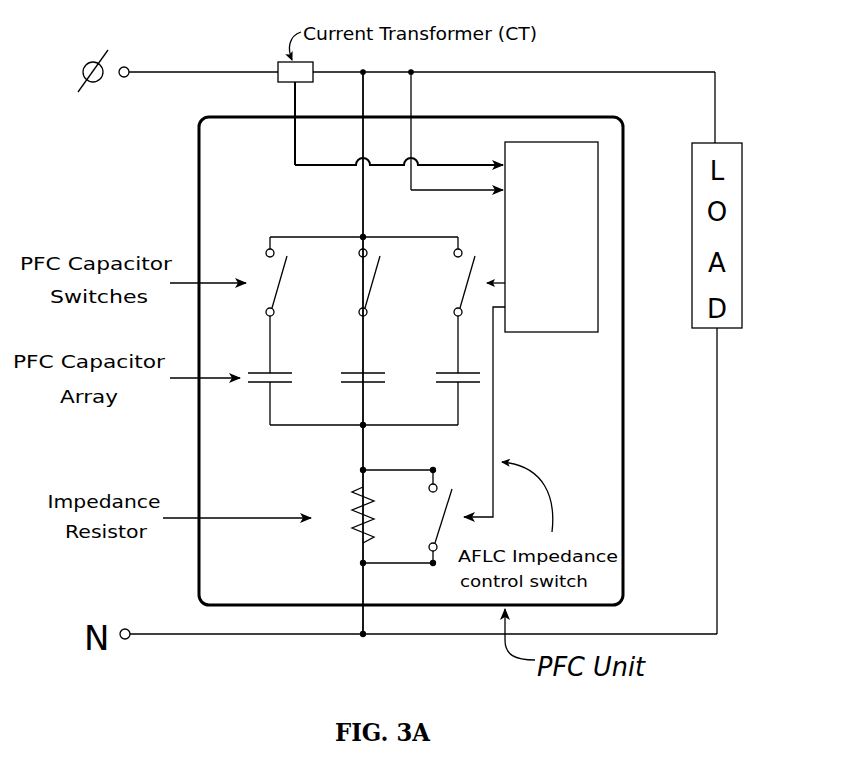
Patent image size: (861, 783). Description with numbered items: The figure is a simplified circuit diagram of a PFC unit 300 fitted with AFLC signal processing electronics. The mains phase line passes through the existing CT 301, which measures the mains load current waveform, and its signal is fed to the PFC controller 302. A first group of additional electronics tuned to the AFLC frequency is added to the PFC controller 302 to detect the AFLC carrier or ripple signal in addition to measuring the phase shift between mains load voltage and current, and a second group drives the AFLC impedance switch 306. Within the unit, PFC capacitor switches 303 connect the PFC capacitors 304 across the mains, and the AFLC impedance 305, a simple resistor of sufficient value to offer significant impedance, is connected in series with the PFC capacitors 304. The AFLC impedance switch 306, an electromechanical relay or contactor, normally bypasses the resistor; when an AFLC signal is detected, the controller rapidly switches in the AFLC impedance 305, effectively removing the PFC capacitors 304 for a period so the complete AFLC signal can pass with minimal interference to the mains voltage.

The PFC unit 300 is at (197, 152).
The CT 301 is at (276, 63).
The PFC controller 302 is at (601, 206).
The PFC capacitor switches 303 is at (443, 261).
The PFC capacitors 304 is at (284, 368).
The AFLC impedance 305 is at (350, 504).
The AFLC impedance switch 306 is at (453, 519).